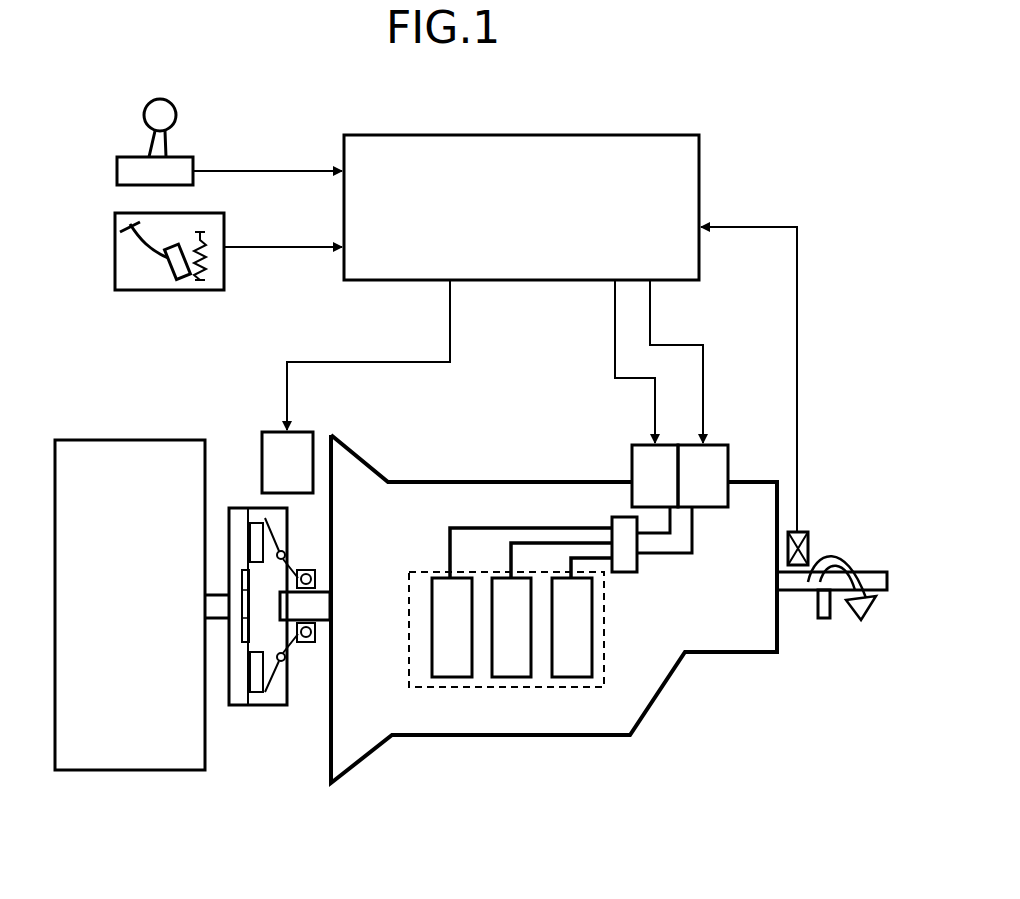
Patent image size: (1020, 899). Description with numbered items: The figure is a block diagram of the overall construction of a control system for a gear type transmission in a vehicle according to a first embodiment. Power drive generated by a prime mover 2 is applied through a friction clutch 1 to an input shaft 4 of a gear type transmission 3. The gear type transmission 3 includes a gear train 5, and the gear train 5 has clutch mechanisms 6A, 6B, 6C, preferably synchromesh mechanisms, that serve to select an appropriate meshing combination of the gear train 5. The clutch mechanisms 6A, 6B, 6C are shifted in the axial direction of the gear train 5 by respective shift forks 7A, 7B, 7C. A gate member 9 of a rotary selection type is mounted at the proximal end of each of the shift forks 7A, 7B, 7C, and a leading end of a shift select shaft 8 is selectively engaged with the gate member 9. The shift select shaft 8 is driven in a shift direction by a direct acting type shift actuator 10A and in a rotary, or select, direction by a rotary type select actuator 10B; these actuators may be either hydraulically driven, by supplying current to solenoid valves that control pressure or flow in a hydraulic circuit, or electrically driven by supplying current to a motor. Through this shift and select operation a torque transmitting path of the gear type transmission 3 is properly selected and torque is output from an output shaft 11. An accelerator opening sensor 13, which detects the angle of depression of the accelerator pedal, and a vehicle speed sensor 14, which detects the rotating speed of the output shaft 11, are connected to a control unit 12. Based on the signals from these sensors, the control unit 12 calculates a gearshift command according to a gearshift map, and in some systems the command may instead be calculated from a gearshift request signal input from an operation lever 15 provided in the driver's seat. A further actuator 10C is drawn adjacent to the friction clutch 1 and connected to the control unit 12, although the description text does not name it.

The friction clutch 1 is at (253, 697).
The prime mover 2 is at (117, 440).
The gear type transmission 3 is at (478, 482).
The input shaft 4 is at (320, 606).
The gear train 5 is at (408, 590).
The clutch mechanism 6A is at (452, 660).
The clutch mechanism 6B is at (510, 660).
The clutch mechanism 6C is at (572, 660).
The shift fork 7A is at (450, 548).
The shift fork 7B is at (527, 542).
The shift fork 7C is at (580, 556).
The shift select shaft 8 is at (683, 533).
The gate member 9 is at (627, 560).
The shift actuator 10A is at (730, 460).
The select actuator 10B is at (667, 445).
The clutch actuator 10C is at (262, 440).
The output shaft 11 is at (870, 572).
The control unit 12 is at (608, 135).
The accelerator opening sensor 13 is at (115, 248).
The vehicle speed sensor 14 is at (800, 532).
The operation lever 15 is at (183, 157).